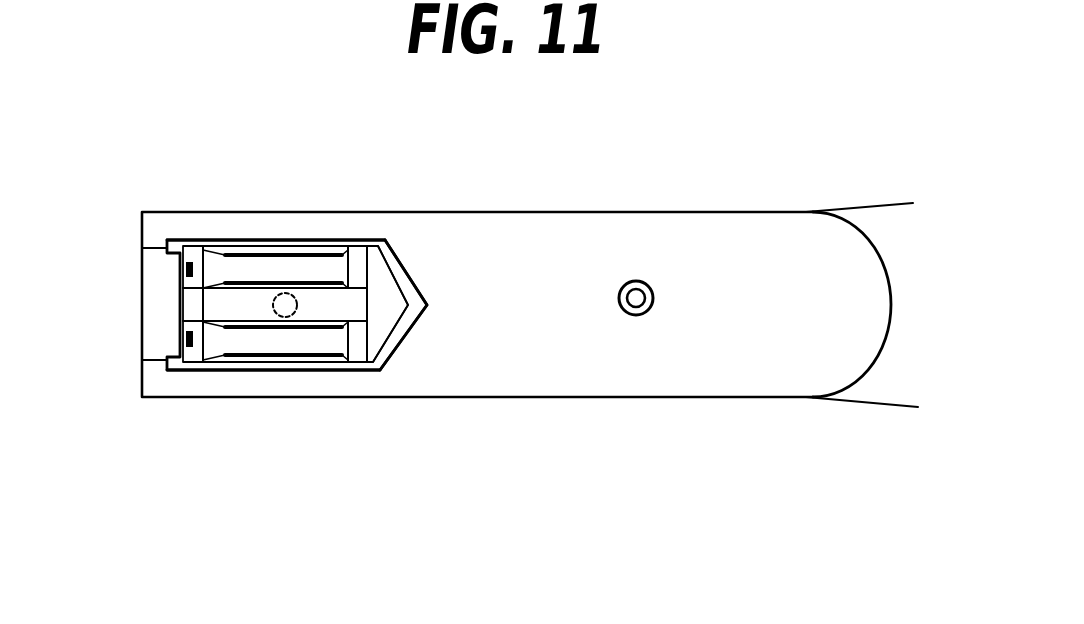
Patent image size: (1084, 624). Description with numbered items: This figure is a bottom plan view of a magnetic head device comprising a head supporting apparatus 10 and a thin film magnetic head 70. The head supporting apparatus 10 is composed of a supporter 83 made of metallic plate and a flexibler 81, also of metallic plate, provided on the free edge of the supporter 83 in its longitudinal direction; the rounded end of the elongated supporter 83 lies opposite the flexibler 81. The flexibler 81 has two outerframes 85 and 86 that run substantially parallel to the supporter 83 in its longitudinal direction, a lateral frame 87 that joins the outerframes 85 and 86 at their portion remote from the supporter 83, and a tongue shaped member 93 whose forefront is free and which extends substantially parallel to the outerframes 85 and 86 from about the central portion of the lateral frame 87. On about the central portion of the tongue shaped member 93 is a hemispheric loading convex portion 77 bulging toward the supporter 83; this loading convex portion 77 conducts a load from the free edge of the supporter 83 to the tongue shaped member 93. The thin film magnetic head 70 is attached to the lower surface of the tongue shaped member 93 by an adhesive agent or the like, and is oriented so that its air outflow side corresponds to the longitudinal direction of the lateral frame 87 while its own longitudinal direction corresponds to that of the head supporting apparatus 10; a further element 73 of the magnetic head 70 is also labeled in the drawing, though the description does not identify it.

The head supporting apparatus 10 is at (753, 418).
The thin film magnetic head 70 is at (305, 368).
The tubular member 73 is at (362, 337).
The loading convex portion 77 is at (283, 300).
The flexibler 81 is at (395, 265).
The supporter 83 is at (852, 213).
The outerframe 85 is at (208, 230).
The outerframe 86 is at (348, 382).
The lateral frame 87 is at (155, 309).
The tongue shaped member 93 is at (383, 315).